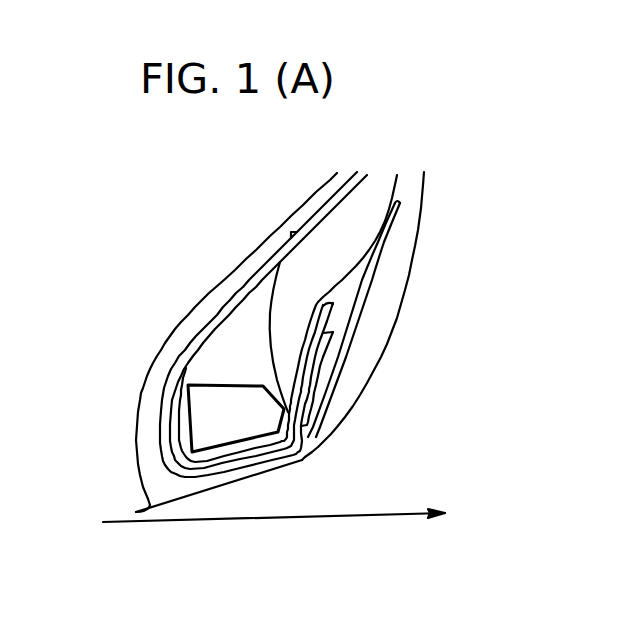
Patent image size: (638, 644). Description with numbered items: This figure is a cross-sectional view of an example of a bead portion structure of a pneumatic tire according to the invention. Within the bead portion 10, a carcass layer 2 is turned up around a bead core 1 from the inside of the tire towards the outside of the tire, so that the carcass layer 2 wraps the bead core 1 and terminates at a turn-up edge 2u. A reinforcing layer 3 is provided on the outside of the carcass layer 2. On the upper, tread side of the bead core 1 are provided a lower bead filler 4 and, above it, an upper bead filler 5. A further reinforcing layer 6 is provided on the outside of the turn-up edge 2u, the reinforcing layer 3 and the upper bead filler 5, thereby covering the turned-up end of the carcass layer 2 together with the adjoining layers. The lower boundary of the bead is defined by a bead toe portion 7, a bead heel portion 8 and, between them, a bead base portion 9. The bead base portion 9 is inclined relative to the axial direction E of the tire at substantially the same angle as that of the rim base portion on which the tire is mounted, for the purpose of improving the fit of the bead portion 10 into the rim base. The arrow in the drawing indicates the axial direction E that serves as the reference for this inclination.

The bead core 1 is at (250, 423).
The carcass layer 2 is at (180, 392).
The turn-up edge 2u is at (333, 304).
The reinforcing layer 3 is at (207, 322).
The lower bead filler 4 is at (228, 357).
The upper bead filler 5 is at (330, 248).
The reinforcing layer 6 is at (337, 345).
The bead toe portion 7 is at (132, 511).
The bead heel portion 8 is at (302, 460).
The bead base portion 9 is at (243, 482).
The bead portion 10 is at (246, 248).
The axial direction of the tire E is at (398, 518).